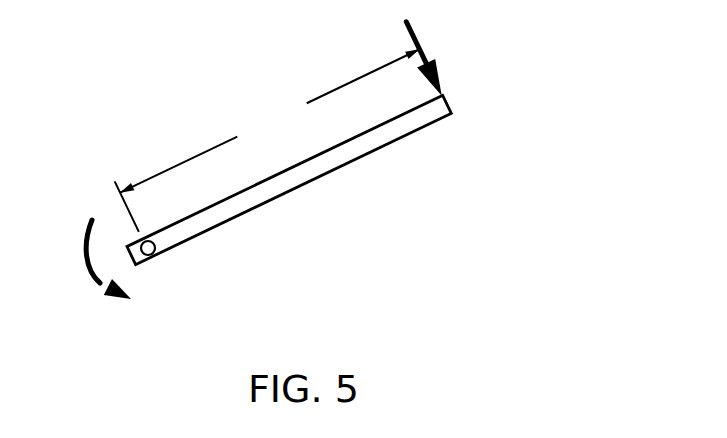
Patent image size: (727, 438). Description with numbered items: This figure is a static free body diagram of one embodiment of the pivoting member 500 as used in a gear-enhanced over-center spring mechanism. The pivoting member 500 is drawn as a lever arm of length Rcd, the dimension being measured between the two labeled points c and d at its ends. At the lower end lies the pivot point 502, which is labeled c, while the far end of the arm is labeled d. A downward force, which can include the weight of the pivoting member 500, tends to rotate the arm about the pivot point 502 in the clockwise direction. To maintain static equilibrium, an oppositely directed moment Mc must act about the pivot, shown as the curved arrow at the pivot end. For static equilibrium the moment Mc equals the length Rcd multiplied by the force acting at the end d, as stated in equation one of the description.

The pivoting member 500 is at (361, 187).
The pivot point 502 is at (157, 248).
The pivot point c is at (139, 232).
The end point d is at (431, 64).
The length of the lever arm Rcd is at (270, 121).
The moment Mc is at (86, 259).